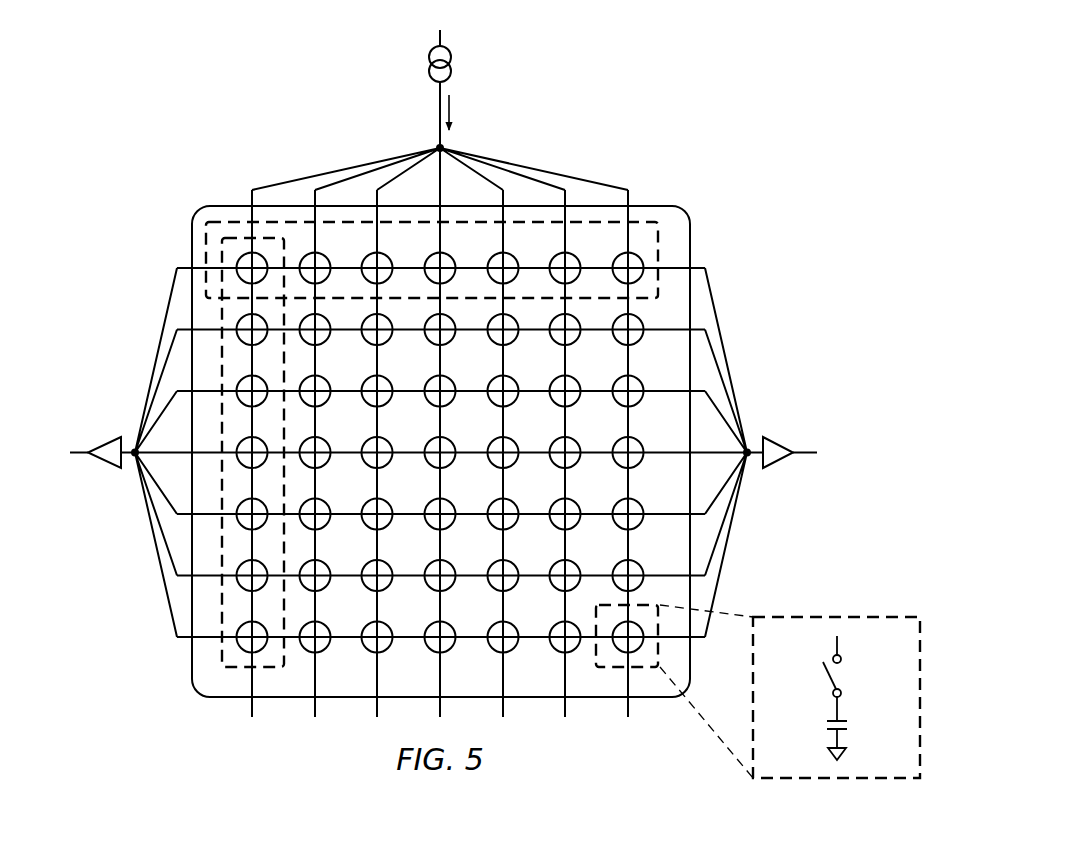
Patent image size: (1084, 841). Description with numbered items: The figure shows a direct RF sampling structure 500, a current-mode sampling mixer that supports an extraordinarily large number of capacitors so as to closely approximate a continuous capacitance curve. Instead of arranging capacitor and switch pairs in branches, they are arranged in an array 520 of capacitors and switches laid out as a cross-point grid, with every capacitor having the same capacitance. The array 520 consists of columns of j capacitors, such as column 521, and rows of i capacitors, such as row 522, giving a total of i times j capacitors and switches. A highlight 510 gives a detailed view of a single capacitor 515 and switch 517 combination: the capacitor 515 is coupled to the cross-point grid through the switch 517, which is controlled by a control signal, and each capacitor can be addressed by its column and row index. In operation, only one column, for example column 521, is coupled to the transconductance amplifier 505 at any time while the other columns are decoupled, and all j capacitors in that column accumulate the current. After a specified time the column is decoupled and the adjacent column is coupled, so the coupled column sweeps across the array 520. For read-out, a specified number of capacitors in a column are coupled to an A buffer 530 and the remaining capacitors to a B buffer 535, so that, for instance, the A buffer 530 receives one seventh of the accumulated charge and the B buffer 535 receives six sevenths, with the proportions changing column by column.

The direct RF sampling structure 500 is at (268, 123).
The transconductance amplifier 505 is at (428, 63).
The highlight 510 is at (617, 669).
The capacitor 515 is at (848, 724).
The switch 517 is at (826, 676).
The array 520 is at (190, 242).
The column 521 is at (240, 673).
The row 522 is at (663, 240).
The A buffer 530 is at (116, 438).
The B buffer 535 is at (780, 438).